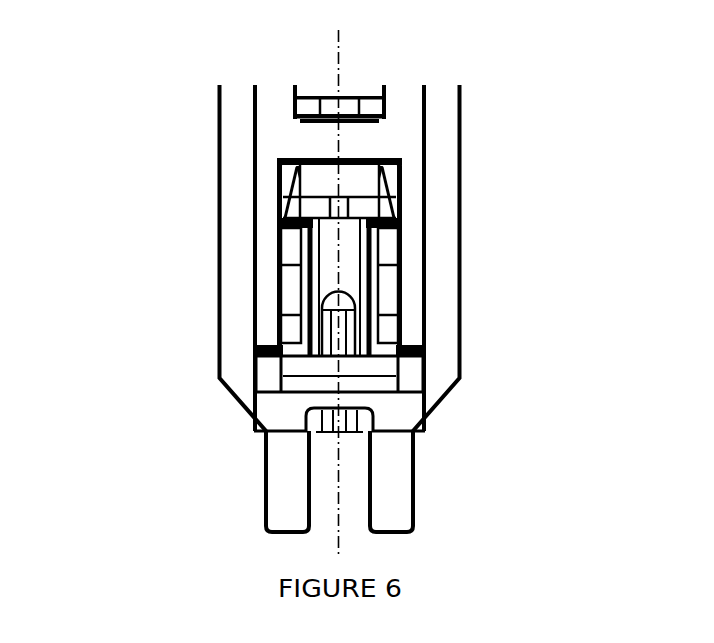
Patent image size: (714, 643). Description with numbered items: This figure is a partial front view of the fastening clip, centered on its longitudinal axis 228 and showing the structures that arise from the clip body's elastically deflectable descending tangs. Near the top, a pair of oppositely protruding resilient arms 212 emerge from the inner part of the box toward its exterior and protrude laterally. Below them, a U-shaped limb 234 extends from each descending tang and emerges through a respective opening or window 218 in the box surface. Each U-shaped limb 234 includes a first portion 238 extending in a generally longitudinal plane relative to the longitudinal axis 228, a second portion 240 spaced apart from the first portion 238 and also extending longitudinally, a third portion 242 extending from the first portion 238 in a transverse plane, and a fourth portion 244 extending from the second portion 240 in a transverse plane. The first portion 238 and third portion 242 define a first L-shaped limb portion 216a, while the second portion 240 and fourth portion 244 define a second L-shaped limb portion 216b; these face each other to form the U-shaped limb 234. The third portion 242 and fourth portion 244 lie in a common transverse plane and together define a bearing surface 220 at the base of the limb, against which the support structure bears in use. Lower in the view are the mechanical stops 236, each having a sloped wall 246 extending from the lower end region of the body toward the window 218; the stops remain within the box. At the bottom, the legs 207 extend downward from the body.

The legs 207 is at (281, 484).
The resilient arms 212 is at (379, 101).
The first L-shaped limb portion 216a is at (265, 278).
The second L-shaped limb portion 216b is at (413, 252).
The opening or window 218 is at (411, 165).
The bearing surface 220 is at (323, 193).
The longitudinal axis 228 is at (331, 53).
The U-shaped limb 234 is at (413, 283).
The mechanical stop 236 is at (290, 380).
The first portion 238 is at (290, 332).
The second portion 240 is at (394, 303).
The third portion 242 is at (311, 210).
The fourth portion 244 is at (358, 210).
The sloped wall 246 is at (376, 380).